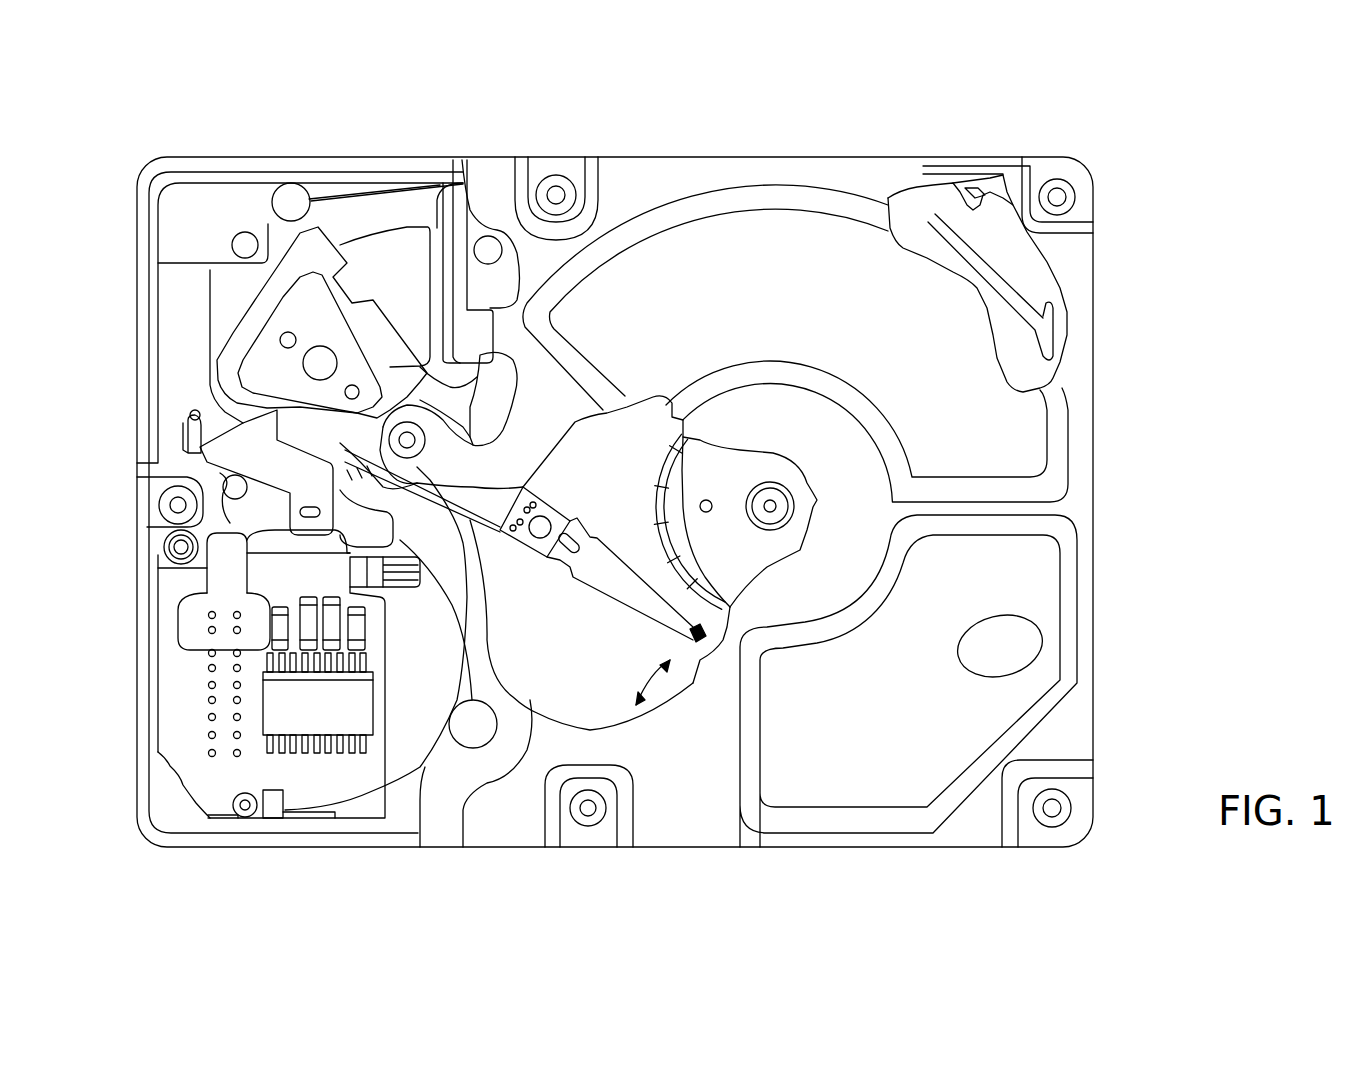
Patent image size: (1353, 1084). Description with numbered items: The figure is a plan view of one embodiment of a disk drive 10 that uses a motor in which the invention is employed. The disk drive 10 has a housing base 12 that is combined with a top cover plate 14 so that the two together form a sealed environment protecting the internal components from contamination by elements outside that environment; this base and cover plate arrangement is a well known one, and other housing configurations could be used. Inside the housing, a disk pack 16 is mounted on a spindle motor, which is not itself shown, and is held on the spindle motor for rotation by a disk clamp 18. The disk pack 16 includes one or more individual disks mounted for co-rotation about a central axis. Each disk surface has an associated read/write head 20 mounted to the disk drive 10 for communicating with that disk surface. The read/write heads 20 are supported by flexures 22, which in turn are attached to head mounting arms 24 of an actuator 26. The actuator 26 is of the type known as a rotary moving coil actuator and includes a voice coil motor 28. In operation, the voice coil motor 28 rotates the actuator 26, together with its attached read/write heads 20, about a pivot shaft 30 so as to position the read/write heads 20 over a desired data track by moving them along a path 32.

The disk drive 10 is at (90, 150).
The housing base 12 is at (285, 848).
The top cover plate 14 is at (1075, 497).
The disk pack 16 is at (463, 847).
The disk clamp 18 is at (743, 553).
The read/write head 20 is at (703, 640).
The flexure 22 is at (613, 585).
The head mounting arm 24 is at (493, 512).
The actuator 26 is at (470, 407).
The voice coil motor 28 is at (377, 233).
The pivot shaft 30 is at (400, 440).
The path 32 is at (662, 705).